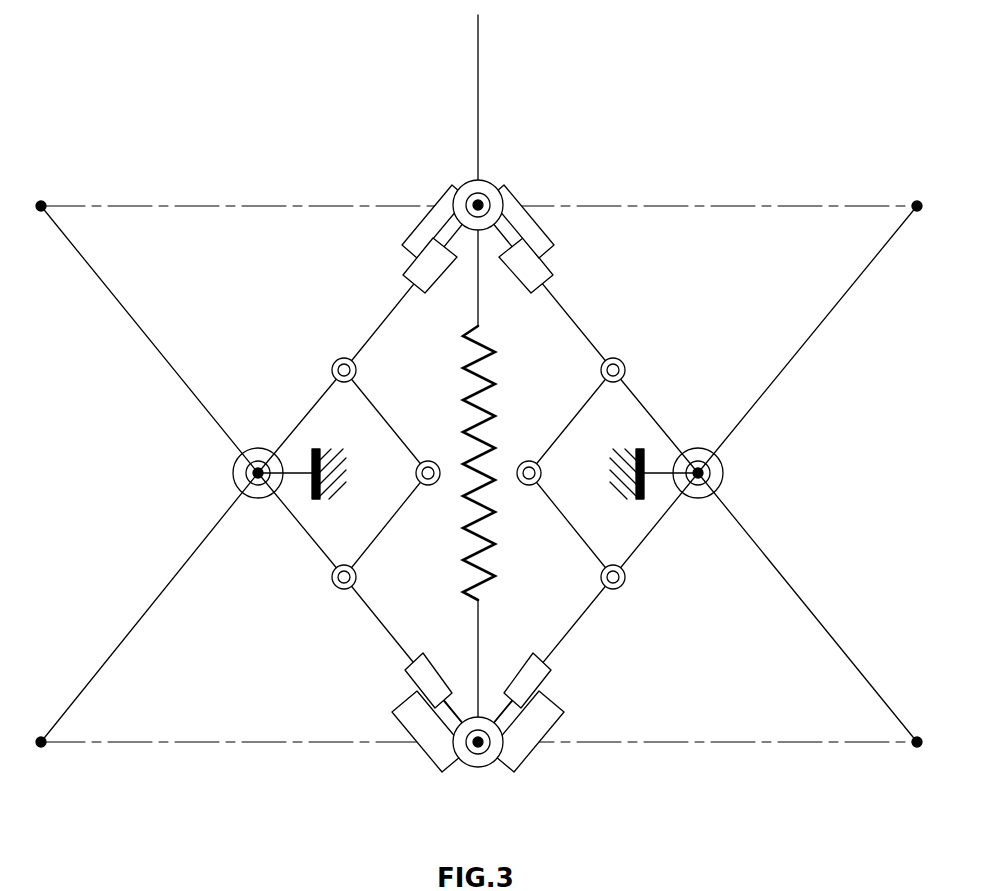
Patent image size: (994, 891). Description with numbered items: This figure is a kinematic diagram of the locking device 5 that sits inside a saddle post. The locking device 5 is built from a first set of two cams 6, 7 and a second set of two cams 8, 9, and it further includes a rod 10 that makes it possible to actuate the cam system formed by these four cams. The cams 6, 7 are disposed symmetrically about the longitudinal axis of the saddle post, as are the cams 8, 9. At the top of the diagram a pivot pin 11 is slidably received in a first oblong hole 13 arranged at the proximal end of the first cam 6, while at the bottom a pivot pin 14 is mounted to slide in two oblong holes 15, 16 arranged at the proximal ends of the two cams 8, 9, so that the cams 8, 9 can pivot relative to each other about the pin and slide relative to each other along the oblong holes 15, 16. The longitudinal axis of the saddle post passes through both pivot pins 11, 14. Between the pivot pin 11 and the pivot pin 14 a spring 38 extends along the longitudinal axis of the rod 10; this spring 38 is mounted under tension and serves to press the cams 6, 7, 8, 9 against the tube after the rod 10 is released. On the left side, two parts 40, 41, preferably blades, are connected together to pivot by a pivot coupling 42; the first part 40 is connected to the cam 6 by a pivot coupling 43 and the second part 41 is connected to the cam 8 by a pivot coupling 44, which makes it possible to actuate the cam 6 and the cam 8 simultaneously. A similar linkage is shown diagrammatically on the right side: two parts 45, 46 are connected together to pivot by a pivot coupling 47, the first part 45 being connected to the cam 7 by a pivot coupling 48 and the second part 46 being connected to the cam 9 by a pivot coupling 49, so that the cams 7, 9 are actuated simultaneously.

The locking device 5 is at (198, 68).
The first cam 6 is at (154, 601).
The cam 7 is at (785, 578).
The cam 8 is at (133, 318).
The cam 9 is at (834, 307).
The rod 10 is at (480, 97).
The pivot pin 11 is at (480, 200).
The first oblong hole 13 is at (405, 279).
The pivot pin 14 is at (478, 746).
The oblong hole 15 is at (406, 676).
The oblong hole 16 is at (552, 676).
The spring 38 is at (497, 354).
The first part 40 is at (387, 420).
The second part 41 is at (388, 525).
The pivot coupling 42 is at (419, 474).
The pivot coupling 43 is at (340, 360).
The pivot coupling 44 is at (340, 586).
The first part 45 is at (570, 420).
The second part 46 is at (569, 525).
The pivot coupling 47 is at (540, 474).
The pivot coupling 48 is at (620, 361).
The pivot coupling 49 is at (622, 586).